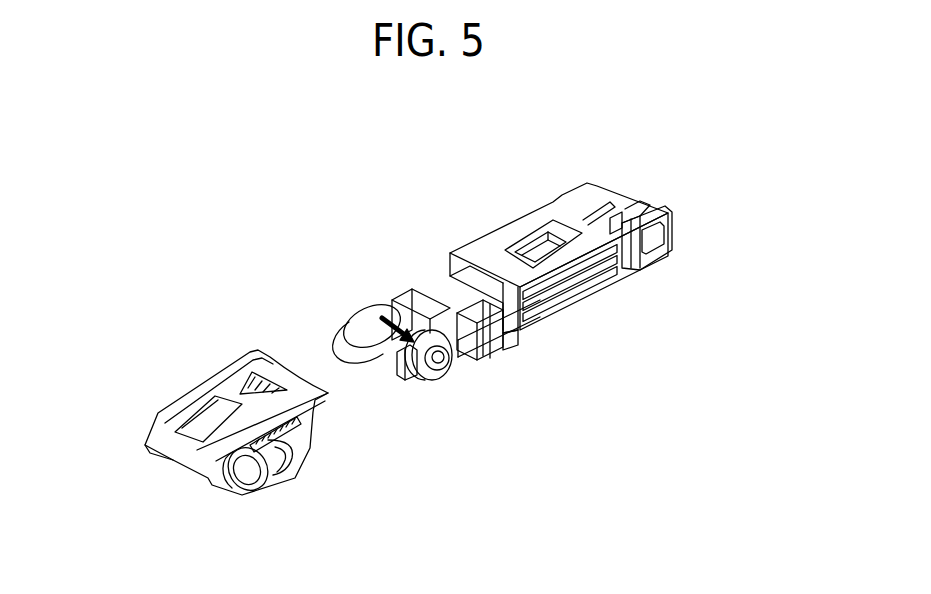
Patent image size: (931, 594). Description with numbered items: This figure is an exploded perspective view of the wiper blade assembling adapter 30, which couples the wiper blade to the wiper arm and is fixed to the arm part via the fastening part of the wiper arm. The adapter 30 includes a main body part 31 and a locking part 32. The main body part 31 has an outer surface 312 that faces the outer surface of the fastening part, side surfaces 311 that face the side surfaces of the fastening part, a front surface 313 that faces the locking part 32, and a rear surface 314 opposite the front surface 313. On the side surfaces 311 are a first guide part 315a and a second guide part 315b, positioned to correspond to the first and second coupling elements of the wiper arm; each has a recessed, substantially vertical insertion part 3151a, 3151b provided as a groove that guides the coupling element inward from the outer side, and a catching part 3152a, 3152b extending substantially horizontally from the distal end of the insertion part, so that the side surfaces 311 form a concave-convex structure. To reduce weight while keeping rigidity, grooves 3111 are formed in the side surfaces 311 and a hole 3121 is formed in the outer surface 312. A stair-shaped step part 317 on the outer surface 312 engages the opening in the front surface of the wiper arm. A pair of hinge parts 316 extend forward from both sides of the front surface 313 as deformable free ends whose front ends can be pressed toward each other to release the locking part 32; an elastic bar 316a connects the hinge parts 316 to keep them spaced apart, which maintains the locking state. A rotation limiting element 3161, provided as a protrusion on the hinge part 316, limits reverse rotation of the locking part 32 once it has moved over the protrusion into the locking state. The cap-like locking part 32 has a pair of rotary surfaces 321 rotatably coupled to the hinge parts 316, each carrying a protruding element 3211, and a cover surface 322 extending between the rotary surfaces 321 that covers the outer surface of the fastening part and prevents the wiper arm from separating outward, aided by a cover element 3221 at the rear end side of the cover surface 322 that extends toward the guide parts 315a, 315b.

The adapter 30 is at (201, 198).
The main body part 31 is at (617, 193).
The side surfaces 311 is at (560, 323).
The grooves 3111 is at (583, 297).
The outer surface 312 is at (557, 202).
The hole 3121 is at (541, 218).
The front surface 313 is at (412, 296).
The rear surface 314 is at (672, 226).
The first guide part 315a is at (505, 348).
The second guide part 315b is at (634, 208).
The insertion part 3151a is at (484, 345).
The insertion part 3151b is at (662, 254).
The catching part 3152a is at (515, 338).
The catching part 3152b is at (637, 273).
The hinge part 316 is at (437, 381).
The elastic bar 316a is at (386, 297).
The rotation limiting element 3161 is at (404, 378).
The step part 317 is at (489, 270).
The locking part 32 is at (158, 412).
The rotary surface 321 is at (210, 482).
The protruding element 3211 is at (305, 445).
The cover surface 322 is at (228, 378).
The cover element 3221 is at (256, 352).